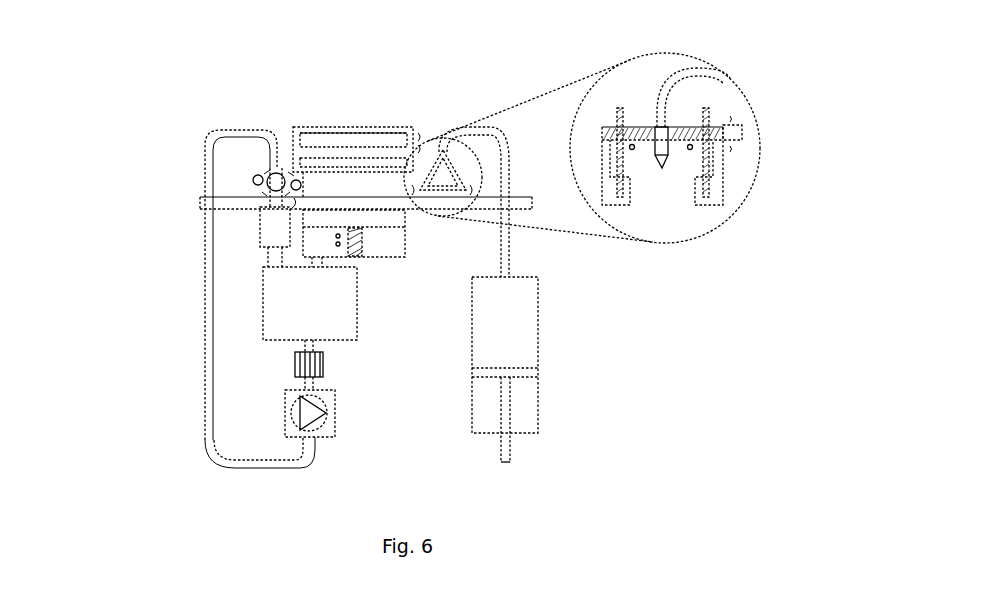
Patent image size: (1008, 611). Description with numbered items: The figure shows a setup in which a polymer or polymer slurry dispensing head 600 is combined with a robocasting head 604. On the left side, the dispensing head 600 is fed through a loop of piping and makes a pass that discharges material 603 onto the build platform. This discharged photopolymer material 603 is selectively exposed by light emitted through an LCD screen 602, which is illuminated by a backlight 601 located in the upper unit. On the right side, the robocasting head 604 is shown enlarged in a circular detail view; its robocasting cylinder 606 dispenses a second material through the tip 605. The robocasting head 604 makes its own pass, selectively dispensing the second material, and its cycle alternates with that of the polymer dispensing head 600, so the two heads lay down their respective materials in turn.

The polymer or polymer slurry dispensing head 600 is at (270, 158).
The backlight 601 is at (357, 135).
The LCD screen 602 is at (350, 165).
The material 603 is at (367, 196).
The robocasting head 604 is at (760, 114).
The tip 605 is at (667, 166).
The robocasting cylinder 606 is at (518, 323).